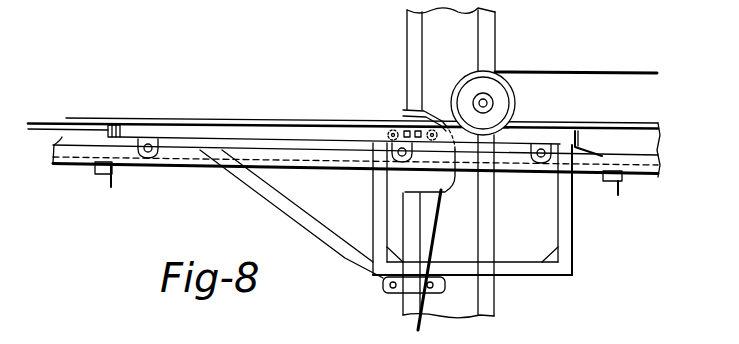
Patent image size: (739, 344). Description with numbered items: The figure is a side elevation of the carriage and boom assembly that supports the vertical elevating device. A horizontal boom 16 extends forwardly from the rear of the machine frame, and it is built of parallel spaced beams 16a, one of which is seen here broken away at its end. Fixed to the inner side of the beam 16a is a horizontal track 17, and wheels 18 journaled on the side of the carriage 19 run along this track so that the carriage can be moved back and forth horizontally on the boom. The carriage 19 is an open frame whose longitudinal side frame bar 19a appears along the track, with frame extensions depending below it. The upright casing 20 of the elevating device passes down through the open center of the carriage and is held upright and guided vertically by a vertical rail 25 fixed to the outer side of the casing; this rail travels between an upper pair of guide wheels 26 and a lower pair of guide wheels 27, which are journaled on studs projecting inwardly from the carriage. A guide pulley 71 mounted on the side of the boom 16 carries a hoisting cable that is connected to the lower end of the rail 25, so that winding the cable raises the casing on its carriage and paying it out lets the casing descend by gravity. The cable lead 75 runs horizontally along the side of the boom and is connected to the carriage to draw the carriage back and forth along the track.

The horizontal boom 16 is at (343, 160).
The beam 16a is at (649, 143).
The horizontal track 17 is at (655, 164).
The wheel 18 is at (166, 141).
The carriage 19 is at (472, 209).
The longitudinal side frame bar 19a is at (560, 238).
The upright casing 20 is at (472, 42).
The vertical rail 25 is at (413, 229).
The upper pair of guide wheels 26 is at (427, 126).
The lower pair of guide wheels 27 is at (420, 295).
The guide pulley 71 is at (500, 92).
The cable lead 75 is at (44, 134).